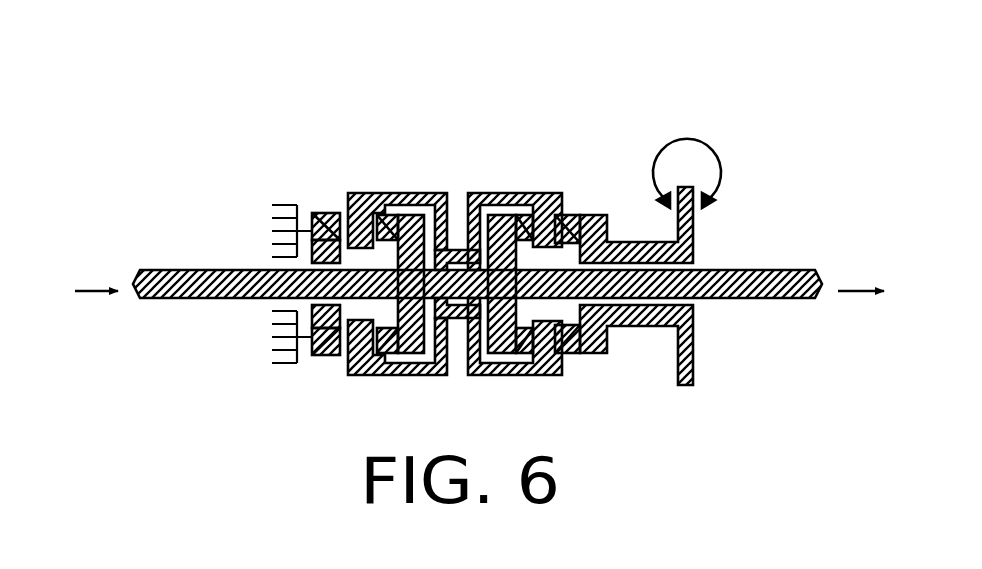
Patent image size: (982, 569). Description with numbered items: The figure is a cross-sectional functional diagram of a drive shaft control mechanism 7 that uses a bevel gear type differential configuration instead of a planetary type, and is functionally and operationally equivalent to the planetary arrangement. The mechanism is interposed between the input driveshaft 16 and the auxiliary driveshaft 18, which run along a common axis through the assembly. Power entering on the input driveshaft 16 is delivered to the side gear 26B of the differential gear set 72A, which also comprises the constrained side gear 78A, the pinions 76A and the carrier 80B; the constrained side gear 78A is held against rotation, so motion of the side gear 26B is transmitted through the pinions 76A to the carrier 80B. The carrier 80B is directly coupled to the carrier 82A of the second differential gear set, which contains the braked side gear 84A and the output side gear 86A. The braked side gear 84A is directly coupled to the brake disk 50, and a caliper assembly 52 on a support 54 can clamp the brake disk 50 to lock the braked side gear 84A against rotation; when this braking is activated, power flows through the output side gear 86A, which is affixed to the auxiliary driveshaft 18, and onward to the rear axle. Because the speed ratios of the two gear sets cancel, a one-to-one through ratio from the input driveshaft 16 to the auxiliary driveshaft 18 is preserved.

The drive system / coupling assembly 7 is at (548, 92).
The input driveshaft 16 is at (201, 271).
The auxiliary driveshaft 18 is at (722, 299).
The side gear 26B is at (446, 345).
The brake disk 50 is at (694, 222).
The caliper assembly 52 is at (718, 161).
The support 54 is at (688, 92).
The differential gear set 72A is at (368, 94).
The pinions 76A is at (331, 213).
The constrained side gear 78A is at (311, 221).
The carrier 80B is at (371, 193).
The carrier 82A is at (549, 193).
The braked side gear 84A is at (562, 215).
The output side gear 86A is at (460, 345).